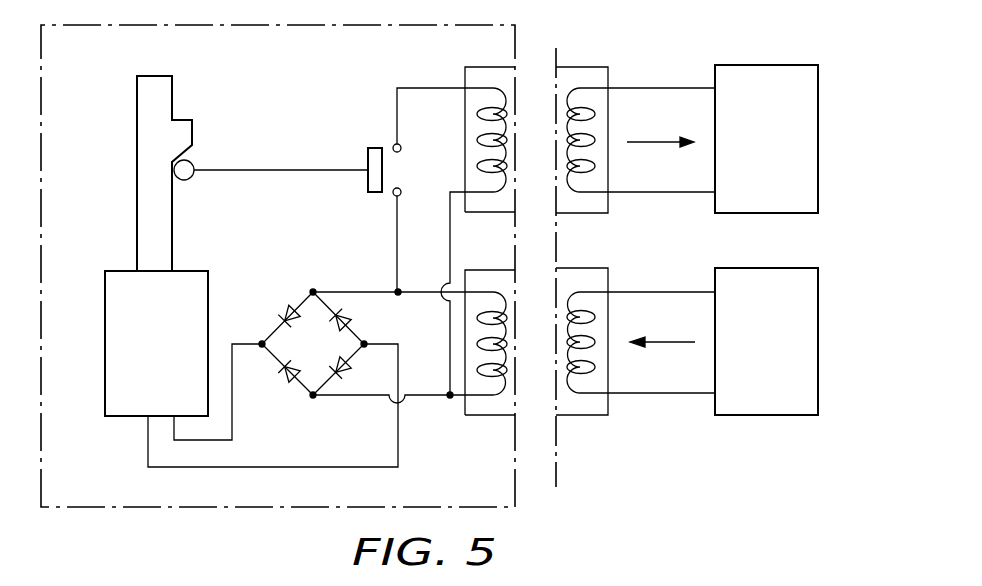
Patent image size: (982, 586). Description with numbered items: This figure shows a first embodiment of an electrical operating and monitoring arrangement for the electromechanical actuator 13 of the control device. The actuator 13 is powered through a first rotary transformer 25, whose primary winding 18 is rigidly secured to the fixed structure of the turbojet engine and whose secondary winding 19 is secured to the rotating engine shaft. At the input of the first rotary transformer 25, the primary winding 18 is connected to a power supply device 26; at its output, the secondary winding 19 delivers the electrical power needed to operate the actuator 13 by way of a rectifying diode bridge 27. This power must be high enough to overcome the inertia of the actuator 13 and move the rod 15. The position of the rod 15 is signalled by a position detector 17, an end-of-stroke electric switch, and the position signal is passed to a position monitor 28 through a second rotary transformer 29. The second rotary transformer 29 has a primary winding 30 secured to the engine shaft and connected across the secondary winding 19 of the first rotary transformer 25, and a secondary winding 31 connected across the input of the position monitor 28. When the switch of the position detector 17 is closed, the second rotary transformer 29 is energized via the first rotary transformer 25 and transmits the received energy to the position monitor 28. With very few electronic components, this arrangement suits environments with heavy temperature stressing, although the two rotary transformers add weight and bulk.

The actuator 13 is at (123, 403).
The rod 15 is at (167, 217).
The position detector 17 is at (375, 152).
The primary winding 18 is at (639, 394).
The secondary winding 19 is at (485, 397).
The first rotary transformer 25 is at (583, 416).
The power supply device 26 is at (781, 360).
The rectifying diode bridge 27 is at (303, 397).
The position monitor 28 is at (781, 157).
The second rotary transformer 29 is at (577, 65).
The primary winding 30 is at (483, 195).
The secondary winding 31 is at (652, 193).